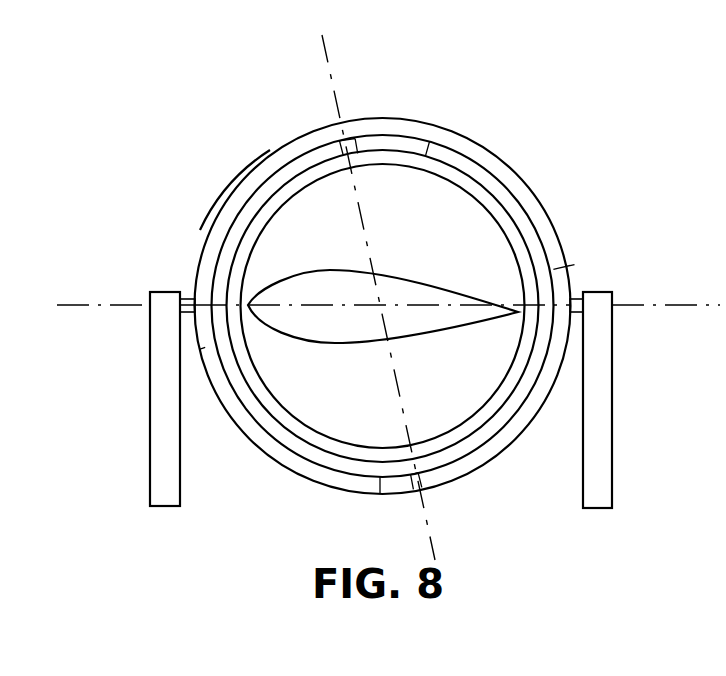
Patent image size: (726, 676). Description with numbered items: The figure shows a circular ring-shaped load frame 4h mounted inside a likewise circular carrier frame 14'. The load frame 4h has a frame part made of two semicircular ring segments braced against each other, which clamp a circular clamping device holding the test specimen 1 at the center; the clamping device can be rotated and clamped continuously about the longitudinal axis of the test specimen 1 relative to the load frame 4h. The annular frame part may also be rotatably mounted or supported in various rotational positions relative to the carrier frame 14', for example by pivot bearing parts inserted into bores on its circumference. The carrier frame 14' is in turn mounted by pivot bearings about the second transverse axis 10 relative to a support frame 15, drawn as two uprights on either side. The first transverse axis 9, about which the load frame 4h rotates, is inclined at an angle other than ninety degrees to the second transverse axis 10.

The test specimen 1 is at (368, 254).
The load frame 4h is at (512, 209).
The first transverse axis 9 is at (328, 38).
The second transverse axis 10 is at (707, 302).
The carrier frame 14' is at (221, 187).
The support frame 15 is at (613, 418).